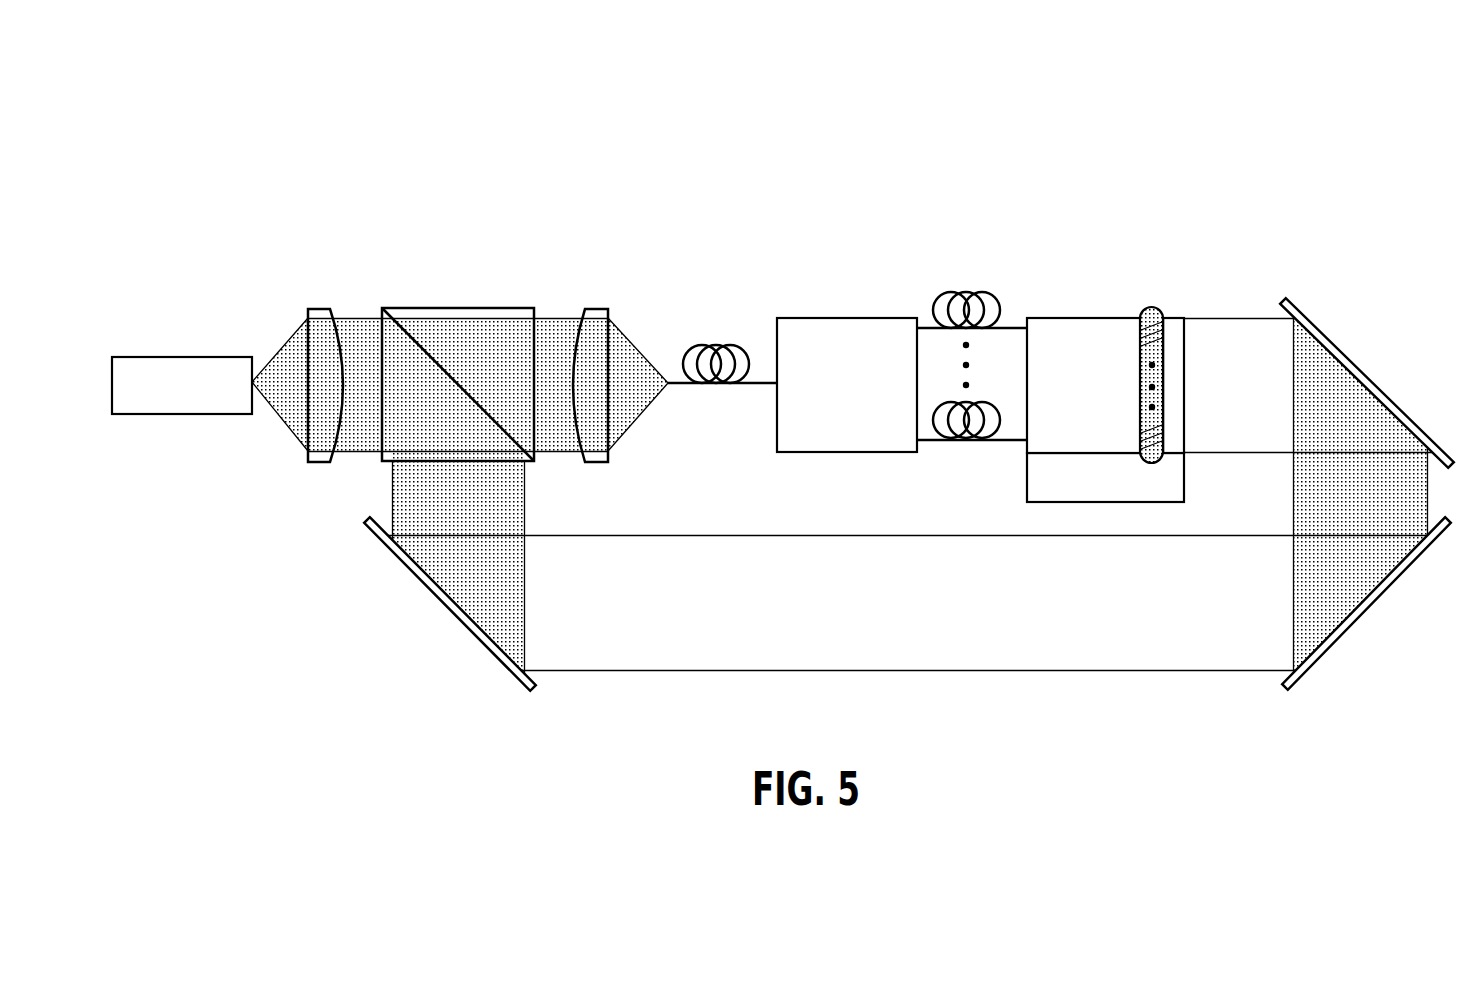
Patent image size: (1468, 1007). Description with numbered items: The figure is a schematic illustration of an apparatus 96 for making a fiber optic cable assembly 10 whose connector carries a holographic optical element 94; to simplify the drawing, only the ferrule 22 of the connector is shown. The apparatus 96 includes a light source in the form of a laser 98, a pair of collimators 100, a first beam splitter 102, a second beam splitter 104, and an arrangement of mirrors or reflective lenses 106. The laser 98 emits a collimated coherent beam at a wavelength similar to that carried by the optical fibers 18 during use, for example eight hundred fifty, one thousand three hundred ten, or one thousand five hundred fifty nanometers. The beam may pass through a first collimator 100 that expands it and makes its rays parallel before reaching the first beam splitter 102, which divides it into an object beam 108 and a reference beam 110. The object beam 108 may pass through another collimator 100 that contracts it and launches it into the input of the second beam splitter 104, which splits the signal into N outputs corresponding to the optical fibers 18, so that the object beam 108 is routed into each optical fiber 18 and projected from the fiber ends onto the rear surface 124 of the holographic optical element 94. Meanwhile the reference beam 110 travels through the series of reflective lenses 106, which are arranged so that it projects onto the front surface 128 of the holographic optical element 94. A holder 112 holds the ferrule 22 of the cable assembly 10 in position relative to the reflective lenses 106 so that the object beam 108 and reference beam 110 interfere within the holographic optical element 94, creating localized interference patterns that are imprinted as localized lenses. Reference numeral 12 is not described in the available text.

The apparatus 96 is at (1340, 138).
The laser 98 is at (130, 357).
The collimator 100 is at (320, 308).
The first beam splitter 102 is at (455, 308).
The object beam 108 is at (552, 316).
The reference beam 110 is at (392, 490).
The reflective lenses 106 is at (438, 600).
The second beam splitter 104 is at (810, 318).
The optical fibers 18 is at (996, 341).
The fiber 12 is at (966, 266).
The fiber optic cable assembly 10 is at (1053, 233).
The ferrule 22 is at (1107, 350).
The rear surface 124 is at (1142, 335).
The holographic optical element 94 is at (1172, 318).
The front surface 128 is at (1187, 330).
The holder 112 is at (1027, 477).